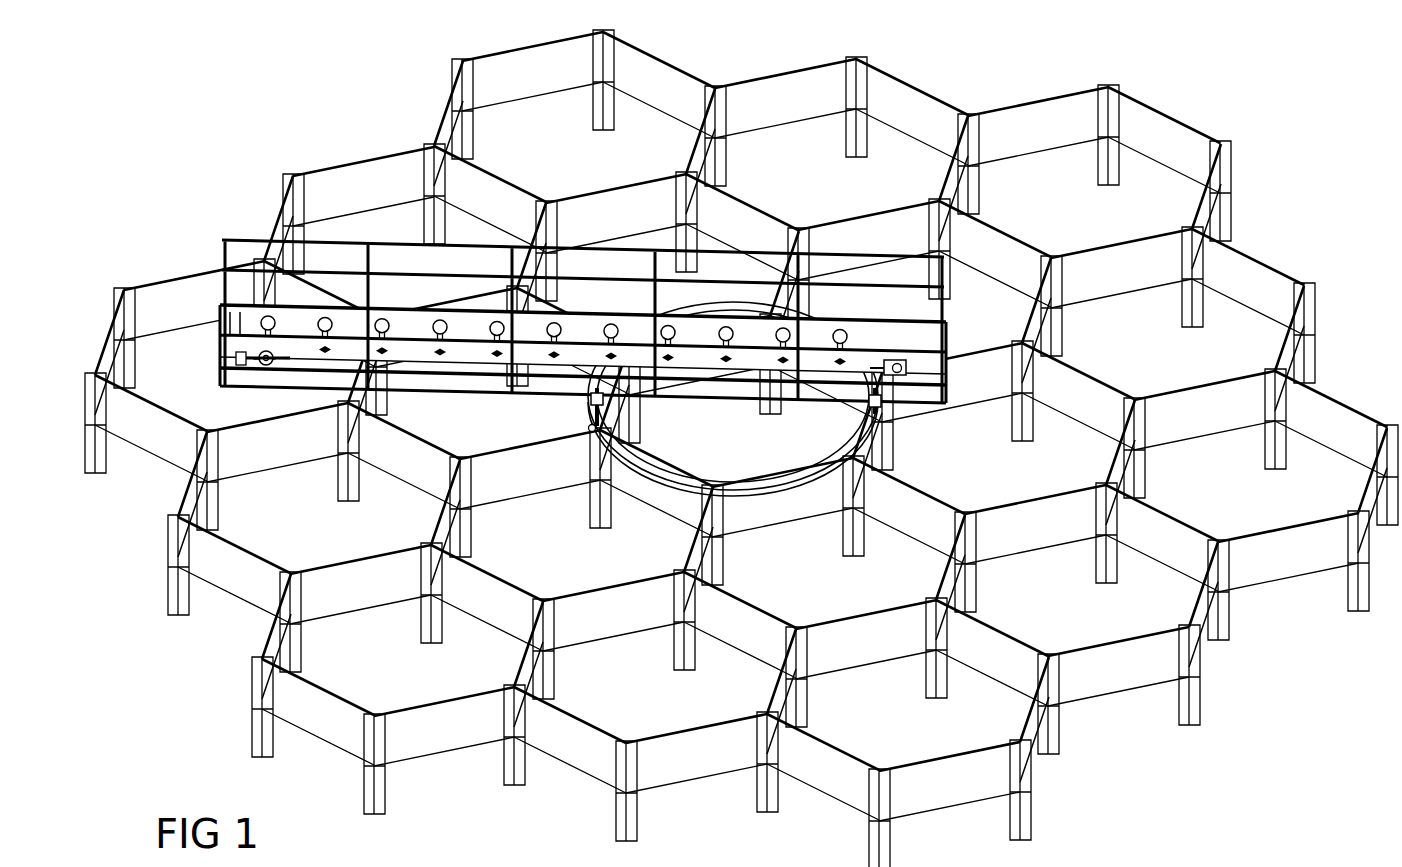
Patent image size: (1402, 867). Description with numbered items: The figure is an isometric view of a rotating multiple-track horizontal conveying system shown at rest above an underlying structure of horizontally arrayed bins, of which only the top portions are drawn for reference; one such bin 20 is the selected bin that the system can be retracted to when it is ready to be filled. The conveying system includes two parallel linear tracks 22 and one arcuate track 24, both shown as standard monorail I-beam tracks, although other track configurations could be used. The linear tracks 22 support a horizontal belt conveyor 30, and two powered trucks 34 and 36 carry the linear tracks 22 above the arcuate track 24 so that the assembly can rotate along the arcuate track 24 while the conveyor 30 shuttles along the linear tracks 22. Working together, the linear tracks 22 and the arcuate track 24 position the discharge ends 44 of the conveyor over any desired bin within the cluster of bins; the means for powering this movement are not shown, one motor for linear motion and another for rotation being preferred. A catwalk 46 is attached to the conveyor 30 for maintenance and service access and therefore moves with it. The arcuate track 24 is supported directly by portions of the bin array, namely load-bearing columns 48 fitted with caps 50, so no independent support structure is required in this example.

The bin 20 is at (741, 426).
The linear track 22 is at (559, 360).
The arcuate track 24 is at (733, 399).
The horizontal belt conveyor 30 is at (554, 372).
The powered truck 34 is at (732, 462).
The powered truck 36 is at (748, 422).
The discharge end 44 is at (631, 361).
The catwalk 46 is at (567, 251).
The load-bearing column 48 is at (741, 448).
The cap 50 is at (741, 441).